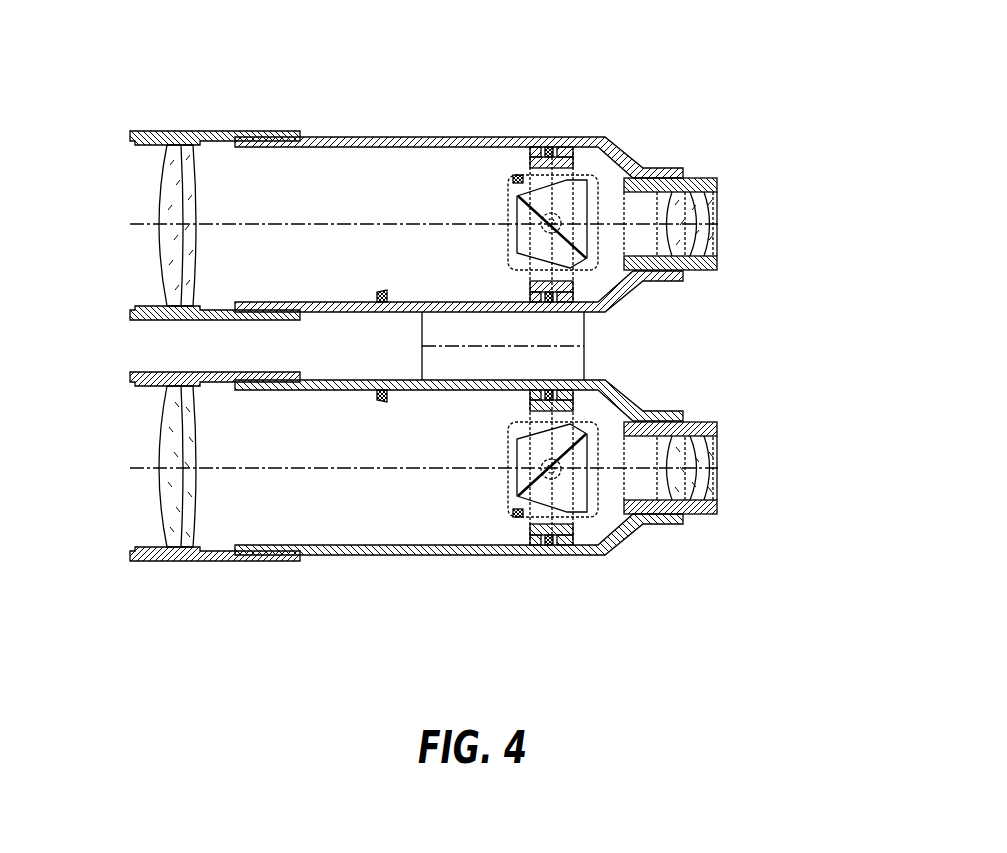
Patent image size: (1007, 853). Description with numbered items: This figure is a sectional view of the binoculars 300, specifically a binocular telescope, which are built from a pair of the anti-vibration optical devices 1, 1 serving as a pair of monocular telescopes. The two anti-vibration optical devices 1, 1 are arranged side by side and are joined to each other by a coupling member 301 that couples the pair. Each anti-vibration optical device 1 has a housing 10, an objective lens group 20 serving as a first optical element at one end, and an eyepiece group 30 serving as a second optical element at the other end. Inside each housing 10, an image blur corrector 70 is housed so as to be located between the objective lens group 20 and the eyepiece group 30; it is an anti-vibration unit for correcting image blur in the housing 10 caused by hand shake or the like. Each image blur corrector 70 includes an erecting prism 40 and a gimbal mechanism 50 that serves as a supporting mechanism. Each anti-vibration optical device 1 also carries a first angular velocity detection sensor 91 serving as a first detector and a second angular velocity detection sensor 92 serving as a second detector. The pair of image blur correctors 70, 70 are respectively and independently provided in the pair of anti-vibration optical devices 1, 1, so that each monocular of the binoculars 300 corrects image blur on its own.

The anti-vibration optical device 1 is at (438, 348).
The housing 10 is at (328, 137).
The objective lens group 20 is at (160, 173).
The eyepiece group 30 is at (717, 213).
The erecting prism 40 is at (592, 207).
The gimbal mechanism 50 is at (582, 168).
The image blur corrector 70 is at (563, 121).
The first angular velocity detection sensor 91 is at (380, 291).
The second angular velocity detection sensor 92 is at (515, 176).
The binoculars 300 is at (457, 348).
The coupling member 301 is at (585, 362).